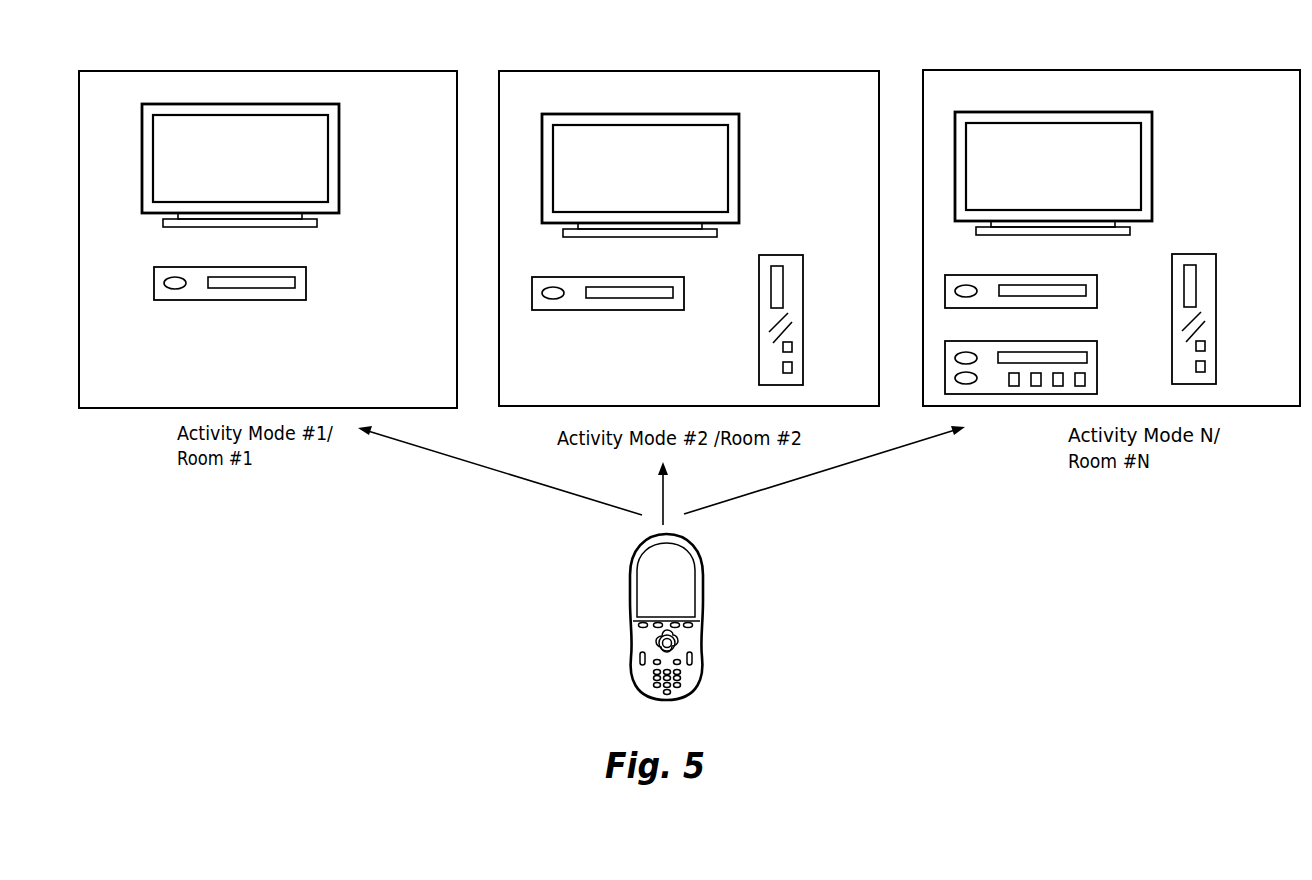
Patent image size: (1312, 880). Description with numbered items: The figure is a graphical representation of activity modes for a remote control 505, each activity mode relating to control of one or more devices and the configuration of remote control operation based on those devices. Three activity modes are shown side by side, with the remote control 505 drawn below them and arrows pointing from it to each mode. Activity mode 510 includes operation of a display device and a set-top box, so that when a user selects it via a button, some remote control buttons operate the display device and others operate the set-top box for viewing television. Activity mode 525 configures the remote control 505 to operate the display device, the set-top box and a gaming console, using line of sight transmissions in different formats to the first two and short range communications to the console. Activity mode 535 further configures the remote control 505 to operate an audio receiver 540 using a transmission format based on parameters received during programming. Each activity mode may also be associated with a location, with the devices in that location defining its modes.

The remote control 505 is at (703, 575).
The activity mode 510 is at (310, 71).
The activity mode 525 is at (712, 71).
The activity mode 535 is at (1180, 70).
The audio receiver 540 is at (1098, 360).